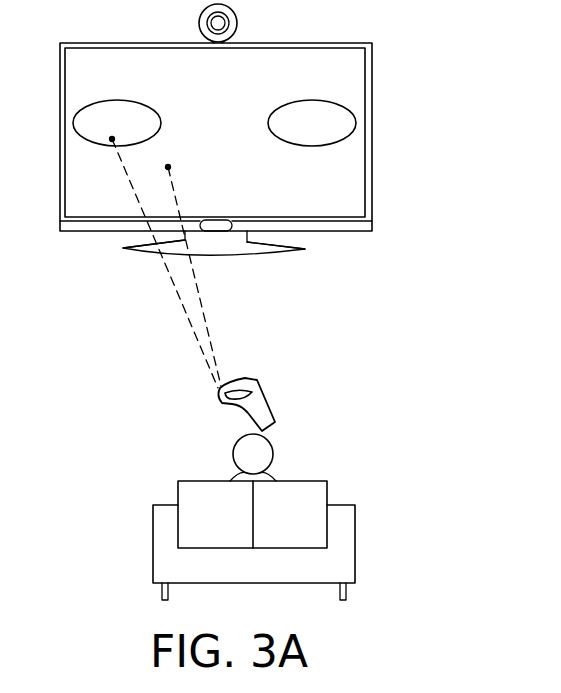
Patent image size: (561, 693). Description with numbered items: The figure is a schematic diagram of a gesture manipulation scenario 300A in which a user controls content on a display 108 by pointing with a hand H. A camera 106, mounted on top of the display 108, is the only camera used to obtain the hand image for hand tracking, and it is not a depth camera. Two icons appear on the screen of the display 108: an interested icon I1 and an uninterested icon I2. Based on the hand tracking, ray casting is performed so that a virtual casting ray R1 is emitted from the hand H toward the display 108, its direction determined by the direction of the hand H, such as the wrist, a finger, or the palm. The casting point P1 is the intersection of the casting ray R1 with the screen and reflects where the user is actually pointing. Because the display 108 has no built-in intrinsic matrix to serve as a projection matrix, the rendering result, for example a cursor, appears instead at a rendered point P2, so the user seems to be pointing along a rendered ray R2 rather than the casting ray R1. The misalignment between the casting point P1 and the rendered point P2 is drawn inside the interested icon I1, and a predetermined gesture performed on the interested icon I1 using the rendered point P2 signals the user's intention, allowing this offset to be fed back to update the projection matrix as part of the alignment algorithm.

The camera 106 is at (198, 17).
The display 108 is at (325, 43).
The interested icon I1 is at (142, 103).
The uninterested icon I2 is at (317, 101).
The casting point P1 is at (175, 152).
The rendered point P2 is at (101, 155).
The casting ray R1 is at (200, 276).
The rendered ray R2 is at (165, 263).
The hand H is at (257, 380).
The gesture manipulation scenario 300A is at (483, 607).